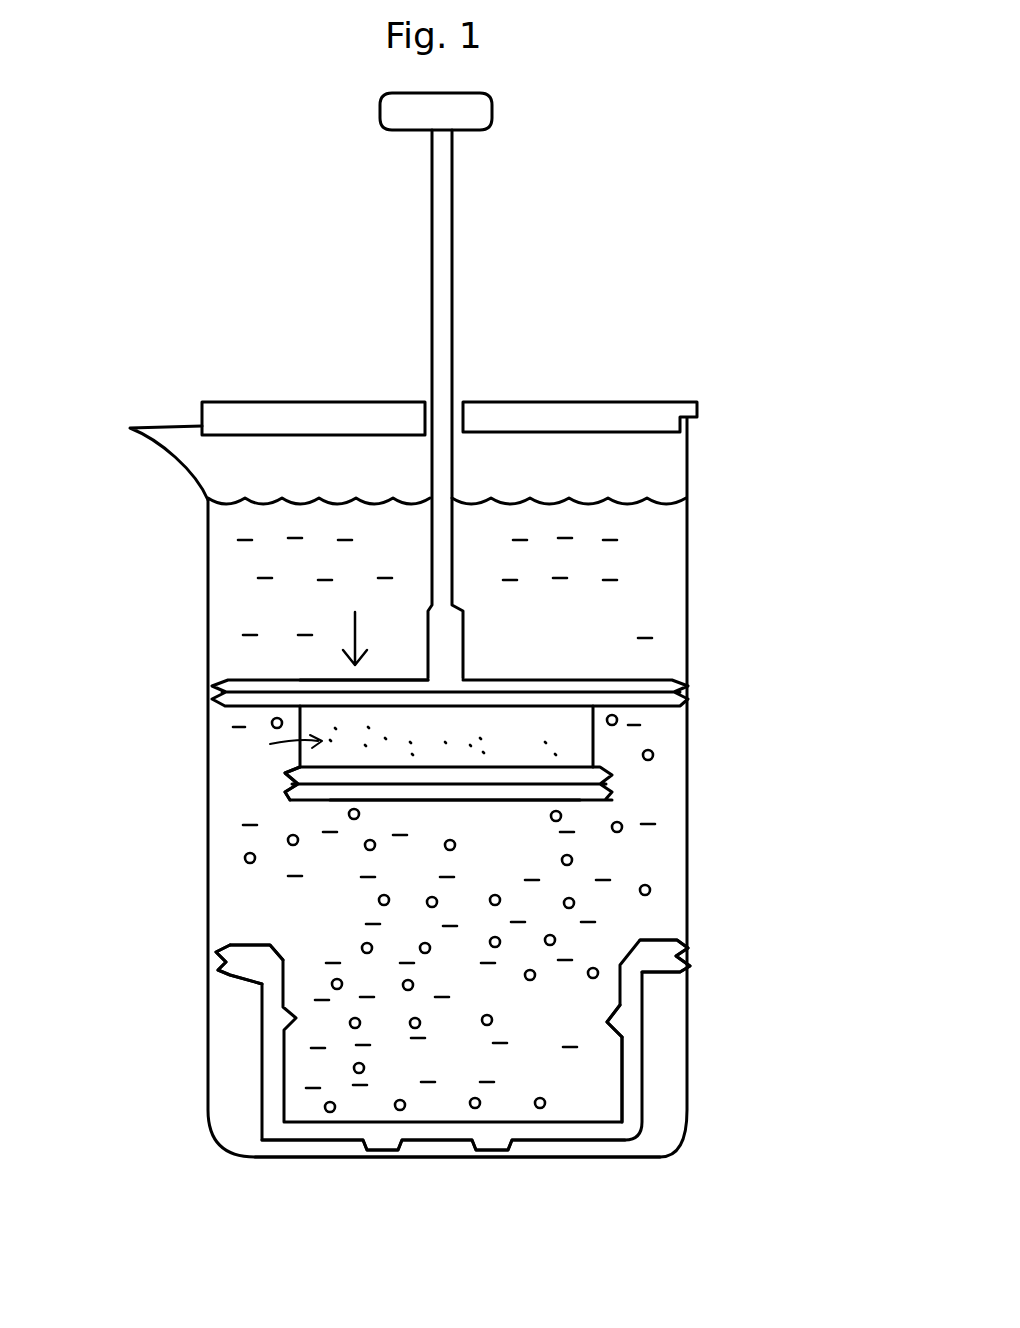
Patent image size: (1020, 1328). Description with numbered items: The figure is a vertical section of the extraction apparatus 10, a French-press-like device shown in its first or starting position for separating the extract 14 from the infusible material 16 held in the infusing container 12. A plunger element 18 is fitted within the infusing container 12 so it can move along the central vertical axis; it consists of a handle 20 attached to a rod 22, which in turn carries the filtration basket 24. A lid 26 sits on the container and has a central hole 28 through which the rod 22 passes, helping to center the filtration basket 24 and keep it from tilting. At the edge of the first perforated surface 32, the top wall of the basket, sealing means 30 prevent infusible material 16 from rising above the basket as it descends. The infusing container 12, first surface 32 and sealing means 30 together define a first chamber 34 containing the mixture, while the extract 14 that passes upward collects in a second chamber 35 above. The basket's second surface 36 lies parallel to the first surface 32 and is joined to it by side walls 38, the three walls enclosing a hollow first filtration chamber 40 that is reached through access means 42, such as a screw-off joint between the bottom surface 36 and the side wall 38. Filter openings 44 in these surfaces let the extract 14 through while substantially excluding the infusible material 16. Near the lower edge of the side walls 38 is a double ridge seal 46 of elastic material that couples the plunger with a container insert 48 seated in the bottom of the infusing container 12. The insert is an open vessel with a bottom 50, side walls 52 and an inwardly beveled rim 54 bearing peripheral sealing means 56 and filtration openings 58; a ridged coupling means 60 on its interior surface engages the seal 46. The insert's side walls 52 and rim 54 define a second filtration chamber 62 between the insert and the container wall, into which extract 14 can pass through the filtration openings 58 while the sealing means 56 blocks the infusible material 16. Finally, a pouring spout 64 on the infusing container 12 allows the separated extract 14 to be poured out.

The extraction apparatus 10 is at (656, 146).
The infusing container 12 is at (688, 456).
The extract 14 is at (612, 600).
The infusible material 16 is at (244, 860).
The plunger element 18 is at (444, 378).
The handle 20 is at (490, 100).
The rod 22 is at (455, 235).
The filtration basket 24 is at (443, 741).
The lid 26 is at (550, 400).
The central hole 28 is at (460, 398).
The sealing means 30 is at (690, 690).
The first perforated surface 32 is at (520, 666).
The first chamber 34 is at (645, 848).
The second chamber 35 is at (690, 566).
The second surface 36 is at (447, 802).
The side walls 38 is at (595, 740).
The first filtration chamber 40 is at (280, 747).
The access means 42 is at (612, 768).
The filter openings 44 is at (432, 738).
The double ridge seal 46 is at (290, 795).
The container insert 48 is at (275, 1072).
The bottom 50 is at (320, 1143).
The side walls 52 is at (618, 1073).
The rim 54 is at (280, 955).
The peripheral sealing means 56 is at (690, 945).
The filtration openings 58 is at (250, 944).
The coupling means 60 is at (605, 1021).
The second filtration chamber 62 is at (650, 1150).
The pouring spout 64 is at (150, 425).